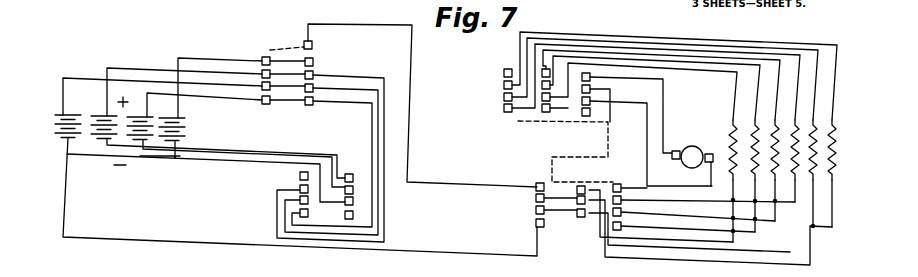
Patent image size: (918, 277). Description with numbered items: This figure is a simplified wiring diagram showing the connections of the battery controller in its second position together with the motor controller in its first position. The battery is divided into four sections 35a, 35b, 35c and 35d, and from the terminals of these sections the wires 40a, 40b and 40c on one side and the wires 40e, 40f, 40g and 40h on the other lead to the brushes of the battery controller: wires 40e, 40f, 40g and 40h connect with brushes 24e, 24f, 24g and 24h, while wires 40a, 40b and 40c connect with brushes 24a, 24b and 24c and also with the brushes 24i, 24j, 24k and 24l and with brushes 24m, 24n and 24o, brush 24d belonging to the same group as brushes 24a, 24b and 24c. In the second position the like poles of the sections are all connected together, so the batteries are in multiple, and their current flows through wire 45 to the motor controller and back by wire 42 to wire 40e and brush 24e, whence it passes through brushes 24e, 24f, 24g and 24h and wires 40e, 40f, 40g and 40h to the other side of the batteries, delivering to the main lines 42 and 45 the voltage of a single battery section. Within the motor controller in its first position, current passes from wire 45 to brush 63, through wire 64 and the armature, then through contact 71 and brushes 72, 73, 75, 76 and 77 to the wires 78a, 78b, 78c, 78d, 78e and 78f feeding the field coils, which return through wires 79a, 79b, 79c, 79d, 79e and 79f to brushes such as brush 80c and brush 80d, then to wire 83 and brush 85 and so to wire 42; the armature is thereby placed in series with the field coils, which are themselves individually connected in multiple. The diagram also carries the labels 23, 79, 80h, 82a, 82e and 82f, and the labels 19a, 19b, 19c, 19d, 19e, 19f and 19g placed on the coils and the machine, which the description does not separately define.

The battery section 35a is at (72, 115).
The battery section 35b is at (100, 116).
The battery section 35c is at (140, 117).
The battery section 35d is at (173, 118).
The wire 42 is at (465, 252).
The wire 45 is at (449, 181).
The wire 40a is at (340, 233).
The wire 40b is at (318, 240).
The wire 40c is at (355, 227).
The wire 40e is at (170, 159).
The wire 40f is at (207, 154).
The wire 40g is at (239, 151).
The wire 40h is at (272, 140).
The switch terminal 23 is at (319, 45).
The brush 24a is at (262, 101).
The brush 24b is at (280, 50).
The brush 24c is at (266, 104).
The brush 24d is at (262, 57).
The brush 24e is at (349, 174).
The brush 24f is at (353, 201).
The brush 24g is at (353, 190).
The brush 24h is at (353, 215).
The brush 24i is at (313, 75).
The brush 24j is at (313, 62).
The brush 24k is at (313, 88).
The brush 24l is at (313, 101).
The brush 24m is at (300, 201).
The brush 24n is at (300, 191).
The brush 24o is at (319, 199).
The contact 71 is at (504, 85).
The brush 72 is at (504, 109).
The brush 73 is at (504, 97).
The brush 75 is at (546, 113).
The brush 76 is at (512, 113).
The brush 77 is at (543, 82).
The wire 78a is at (617, 38).
The wire 78b is at (666, 42).
The wire 78c is at (713, 47).
The wire 78d is at (755, 52).
The wire 78e is at (797, 55).
The wire 78f is at (692, 70).
The switch 79 is at (647, 129).
The wire 79a is at (745, 250).
The wire 79b is at (712, 238).
The wire 79c is at (689, 221).
The wire 79d is at (675, 242).
The wire 79e is at (603, 247).
The wire 79f is at (647, 246).
The brush 80c is at (632, 189).
The brush 80d is at (704, 208).
The switch contact 80h is at (684, 224).
The switch contact 82a is at (556, 202).
The switch contact 82e is at (566, 214).
The switch contact 82f is at (556, 215).
The wire 83 is at (536, 188).
The brush 85 is at (536, 224).
The brush 63 is at (629, 139).
The wire 64 is at (682, 115).
The resistance 19a is at (830, 166).
The resistance 19b is at (812, 165).
The resistance 19c is at (791, 155).
The resistance 19d is at (772, 165).
The resistance 19e is at (753, 168).
The resistance 19f is at (722, 174).
The motor 19g is at (690, 146).